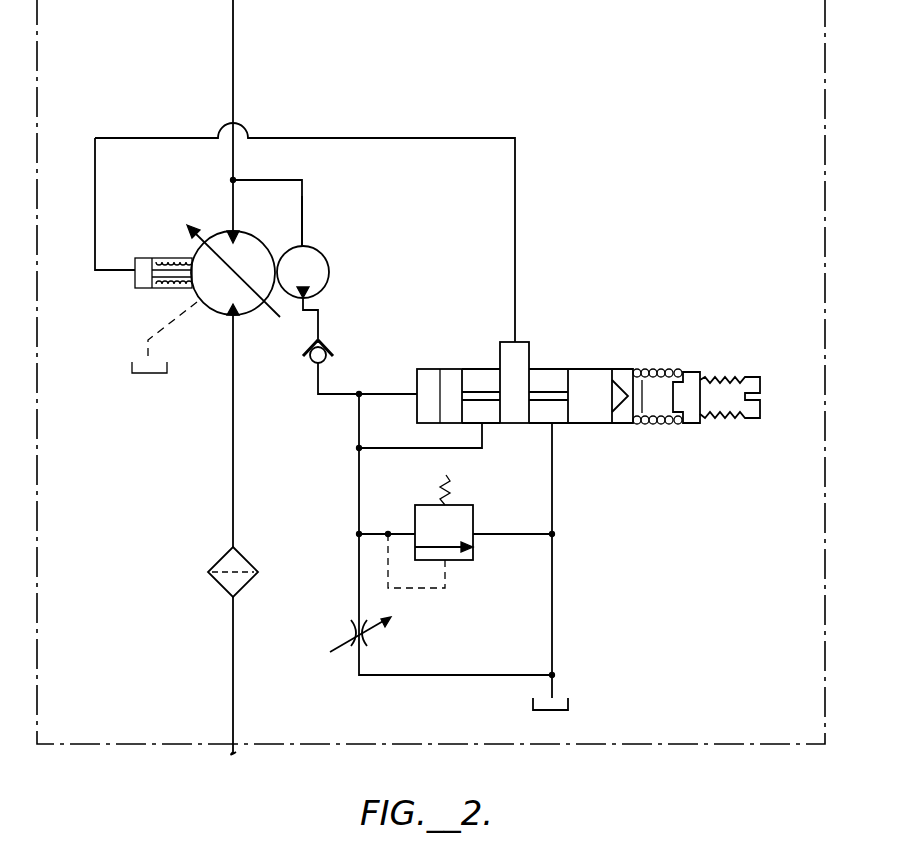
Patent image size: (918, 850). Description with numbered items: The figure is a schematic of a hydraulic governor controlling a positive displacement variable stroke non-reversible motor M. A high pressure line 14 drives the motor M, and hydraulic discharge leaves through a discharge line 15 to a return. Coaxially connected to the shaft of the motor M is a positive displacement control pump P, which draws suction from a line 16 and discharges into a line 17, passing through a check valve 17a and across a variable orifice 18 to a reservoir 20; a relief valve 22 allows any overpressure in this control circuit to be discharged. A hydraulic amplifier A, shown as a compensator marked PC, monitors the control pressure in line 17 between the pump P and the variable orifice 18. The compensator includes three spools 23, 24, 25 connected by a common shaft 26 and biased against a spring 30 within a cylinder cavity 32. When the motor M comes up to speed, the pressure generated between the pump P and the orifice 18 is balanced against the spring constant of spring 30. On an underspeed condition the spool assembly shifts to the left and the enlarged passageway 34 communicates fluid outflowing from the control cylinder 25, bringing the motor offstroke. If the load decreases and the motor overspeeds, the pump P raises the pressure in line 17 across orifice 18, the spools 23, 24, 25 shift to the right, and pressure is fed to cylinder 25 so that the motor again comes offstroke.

The high pressure line 14 is at (233, 490).
The discharge line 15 is at (233, 212).
The suction line 16 is at (302, 212).
The control pressure line 17 is at (318, 331).
The check valve 17a is at (425, 449).
The variable orifice 18 is at (346, 631).
The reservoir 20 is at (568, 704).
The relief valve 22 is at (473, 518).
The spool 23 is at (452, 378).
The spool 24 is at (518, 382).
The spool (control cylinder) 25 is at (145, 289).
The common shaft 26 is at (483, 391).
The spring 30 is at (660, 372).
The cylinder cavity 32 is at (548, 373).
The enlarged passageway 34 is at (527, 343).
The control pump P is at (325, 260).
The motor M is at (200, 304).
The hydraulic amplifier A is at (663, 432).
The pressure compensator PC is at (407, 634).